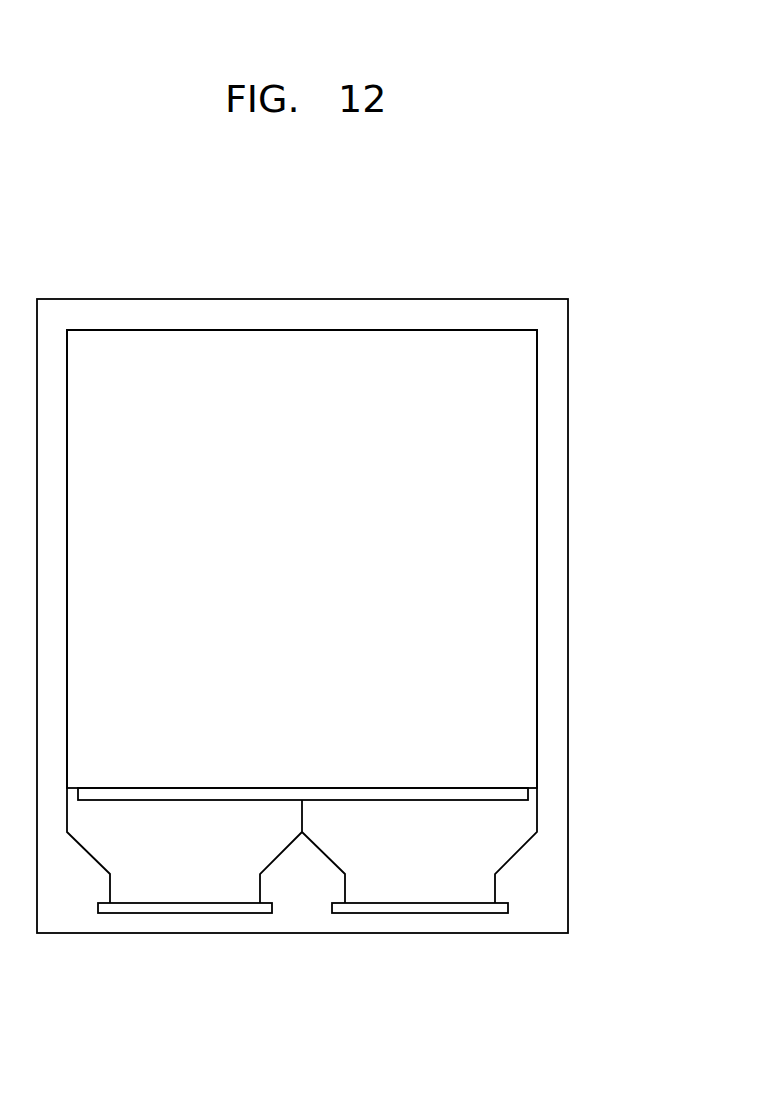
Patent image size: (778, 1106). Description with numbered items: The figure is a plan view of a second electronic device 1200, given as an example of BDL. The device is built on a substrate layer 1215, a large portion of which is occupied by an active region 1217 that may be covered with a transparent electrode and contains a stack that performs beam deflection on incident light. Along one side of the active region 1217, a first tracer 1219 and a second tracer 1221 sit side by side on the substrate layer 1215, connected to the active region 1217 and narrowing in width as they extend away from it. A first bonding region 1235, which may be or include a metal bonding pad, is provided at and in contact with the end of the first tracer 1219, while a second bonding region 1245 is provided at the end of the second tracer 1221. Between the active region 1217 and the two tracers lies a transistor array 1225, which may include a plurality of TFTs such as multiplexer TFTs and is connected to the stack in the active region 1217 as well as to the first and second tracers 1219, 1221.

The second electronic device 1200 is at (585, 282).
The substrate layer 1215 is at (552, 496).
The active region 1217 is at (515, 663).
The transistor array 1225 is at (520, 793).
The first tracer 1219 is at (155, 876).
The first bonding region 1235 is at (223, 908).
The second tracer 1221 is at (388, 876).
The second bonding region 1245 is at (457, 908).